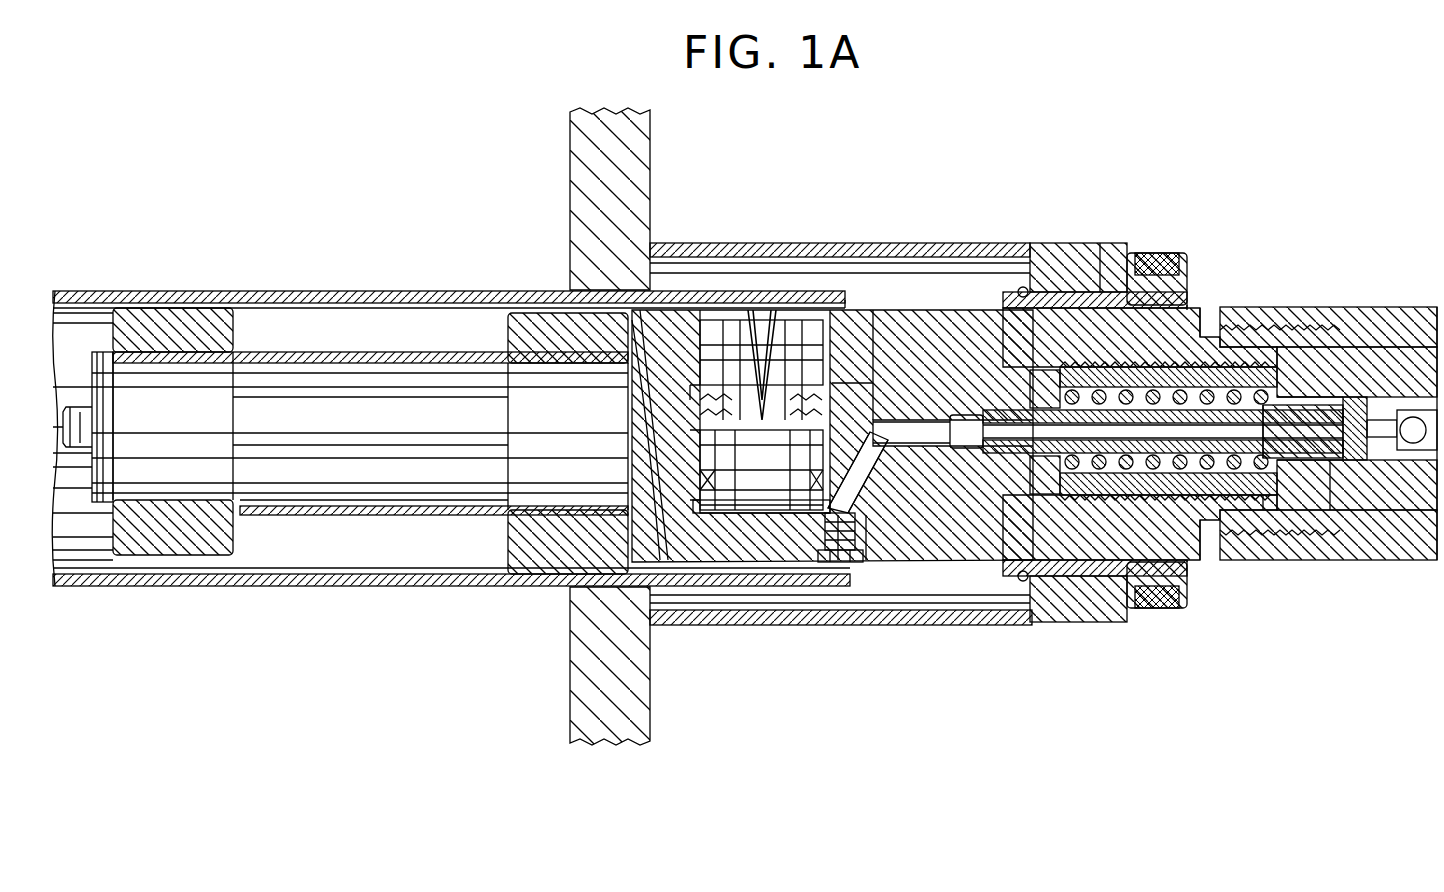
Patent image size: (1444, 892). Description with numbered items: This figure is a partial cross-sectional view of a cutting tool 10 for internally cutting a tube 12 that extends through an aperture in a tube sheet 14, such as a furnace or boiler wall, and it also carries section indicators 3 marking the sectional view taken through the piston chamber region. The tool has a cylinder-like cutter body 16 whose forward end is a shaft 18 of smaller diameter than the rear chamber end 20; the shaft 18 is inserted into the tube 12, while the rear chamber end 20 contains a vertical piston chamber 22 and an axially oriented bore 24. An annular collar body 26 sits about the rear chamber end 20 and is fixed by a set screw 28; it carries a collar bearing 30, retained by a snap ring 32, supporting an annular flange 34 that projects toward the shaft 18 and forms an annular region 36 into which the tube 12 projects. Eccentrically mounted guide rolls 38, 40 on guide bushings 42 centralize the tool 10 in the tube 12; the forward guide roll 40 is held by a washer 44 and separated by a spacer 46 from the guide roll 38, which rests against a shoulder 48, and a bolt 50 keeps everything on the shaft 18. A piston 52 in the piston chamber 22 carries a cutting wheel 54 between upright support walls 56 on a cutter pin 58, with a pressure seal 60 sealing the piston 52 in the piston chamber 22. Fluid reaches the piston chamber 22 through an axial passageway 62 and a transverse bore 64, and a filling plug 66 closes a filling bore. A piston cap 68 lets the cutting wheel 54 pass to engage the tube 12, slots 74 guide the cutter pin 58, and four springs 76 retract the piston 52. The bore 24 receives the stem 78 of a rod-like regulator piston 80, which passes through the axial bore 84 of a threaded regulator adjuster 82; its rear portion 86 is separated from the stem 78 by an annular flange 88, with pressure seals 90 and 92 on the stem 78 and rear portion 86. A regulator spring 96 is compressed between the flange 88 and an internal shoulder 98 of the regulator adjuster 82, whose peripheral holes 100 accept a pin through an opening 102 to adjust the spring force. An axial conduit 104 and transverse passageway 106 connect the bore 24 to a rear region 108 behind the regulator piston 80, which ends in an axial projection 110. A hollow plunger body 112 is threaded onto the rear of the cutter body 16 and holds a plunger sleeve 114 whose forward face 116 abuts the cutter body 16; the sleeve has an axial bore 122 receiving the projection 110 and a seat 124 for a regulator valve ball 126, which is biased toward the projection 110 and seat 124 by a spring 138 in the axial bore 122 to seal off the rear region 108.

The section line 3- 3 is at (535, 300).
The cutting tool 10 is at (1183, 185).
The tube 12 is at (430, 586).
The tube sheet 14 is at (610, 110).
The cutter body 16 is at (705, 562).
The shaft 18 is at (388, 430).
The rear chamber end 20 is at (920, 328).
The piston chamber 22 is at (695, 425).
The bore 24 is at (965, 448).
The collar body 26 is at (1130, 580).
The set screw 28 is at (1180, 308).
The collar bearing 30 is at (1090, 243).
The snap ring 32 is at (1015, 292).
The annular flange 34 is at (720, 243).
The annular region 36 is at (985, 578).
The guide roll 38 is at (555, 552).
The guide roll 40 is at (155, 308).
The guide bushings 42 is at (185, 363).
The washer 44 is at (105, 352).
The spacer 46 is at (288, 515).
The shoulder 48 is at (660, 405).
The bolt 50 is at (80, 428).
The piston 52 is at (761, 471).
The cutting wheel 54 is at (765, 320).
The upright support walls 56 is at (800, 320).
The cutter pin 58 is at (705, 320).
The pressure seal 60 is at (695, 462).
The passageway 62 is at (905, 438).
The transverse bore 64 is at (870, 490).
The filling plug 66 is at (850, 560).
The piston cap 68 is at (866, 322).
The slots 74 is at (830, 330).
The springs 76 is at (800, 425).
The stem 78 is at (1012, 390).
The regulator piston 80 is at (1185, 455).
The regulator adjuster 82 is at (1097, 578).
The axial bore 84 is at (1170, 570).
The rear portion 86 is at (1275, 458).
The annular flange 88 is at (1240, 465).
The pressure seal 90 is at (985, 408).
The pressure seal 92 is at (1330, 308).
The regulator spring 96 is at (1185, 336).
The shoulder 98 is at (1050, 582).
The holes 100 is at (1100, 300).
The opening 102 is at (1140, 290).
The conduit 104 is at (1215, 380).
The transverse passageway 106 is at (1345, 510).
The rear region 108 is at (1320, 398).
The projection 110 is at (1370, 462).
The plunger body 112 is at (1245, 512).
The plunger sleeve 114 is at (1320, 482).
The forward face 116 is at (1250, 400).
The axial bore 122 is at (1437, 450).
The seat 124 is at (1340, 352).
The regulator valve ball 126 is at (1400, 410).
The spring 138 is at (1416, 417).